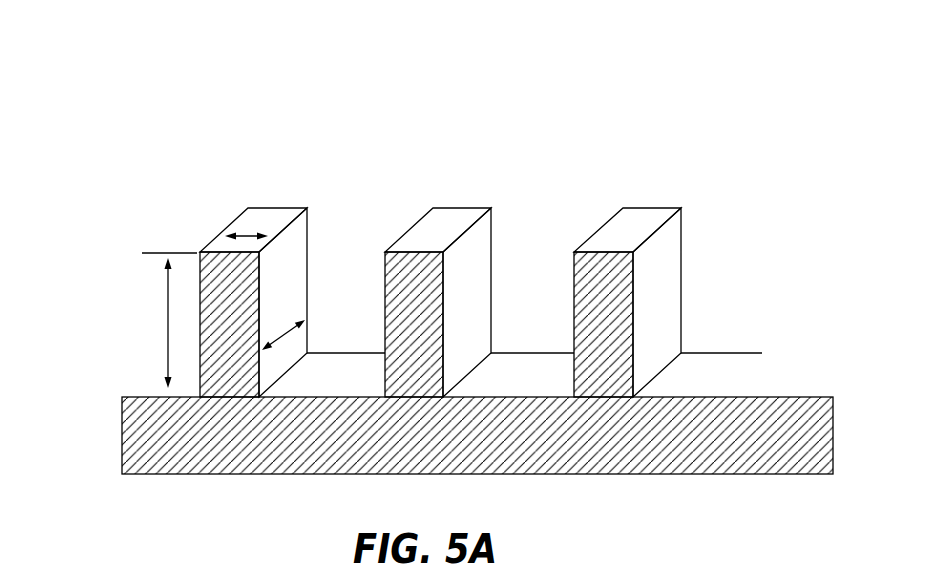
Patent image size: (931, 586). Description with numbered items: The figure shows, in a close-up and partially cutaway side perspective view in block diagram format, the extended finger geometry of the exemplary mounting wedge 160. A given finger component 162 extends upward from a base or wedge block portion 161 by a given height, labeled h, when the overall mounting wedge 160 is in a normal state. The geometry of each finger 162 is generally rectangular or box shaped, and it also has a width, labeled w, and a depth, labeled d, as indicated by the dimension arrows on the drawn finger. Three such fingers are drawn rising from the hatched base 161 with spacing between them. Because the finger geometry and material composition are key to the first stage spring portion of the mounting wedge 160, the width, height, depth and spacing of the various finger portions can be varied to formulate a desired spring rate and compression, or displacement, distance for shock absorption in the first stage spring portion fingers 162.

The mounting wedge 160 is at (150, 96).
The base or wedge block portion 161 is at (140, 438).
The finger component 162 is at (217, 273).